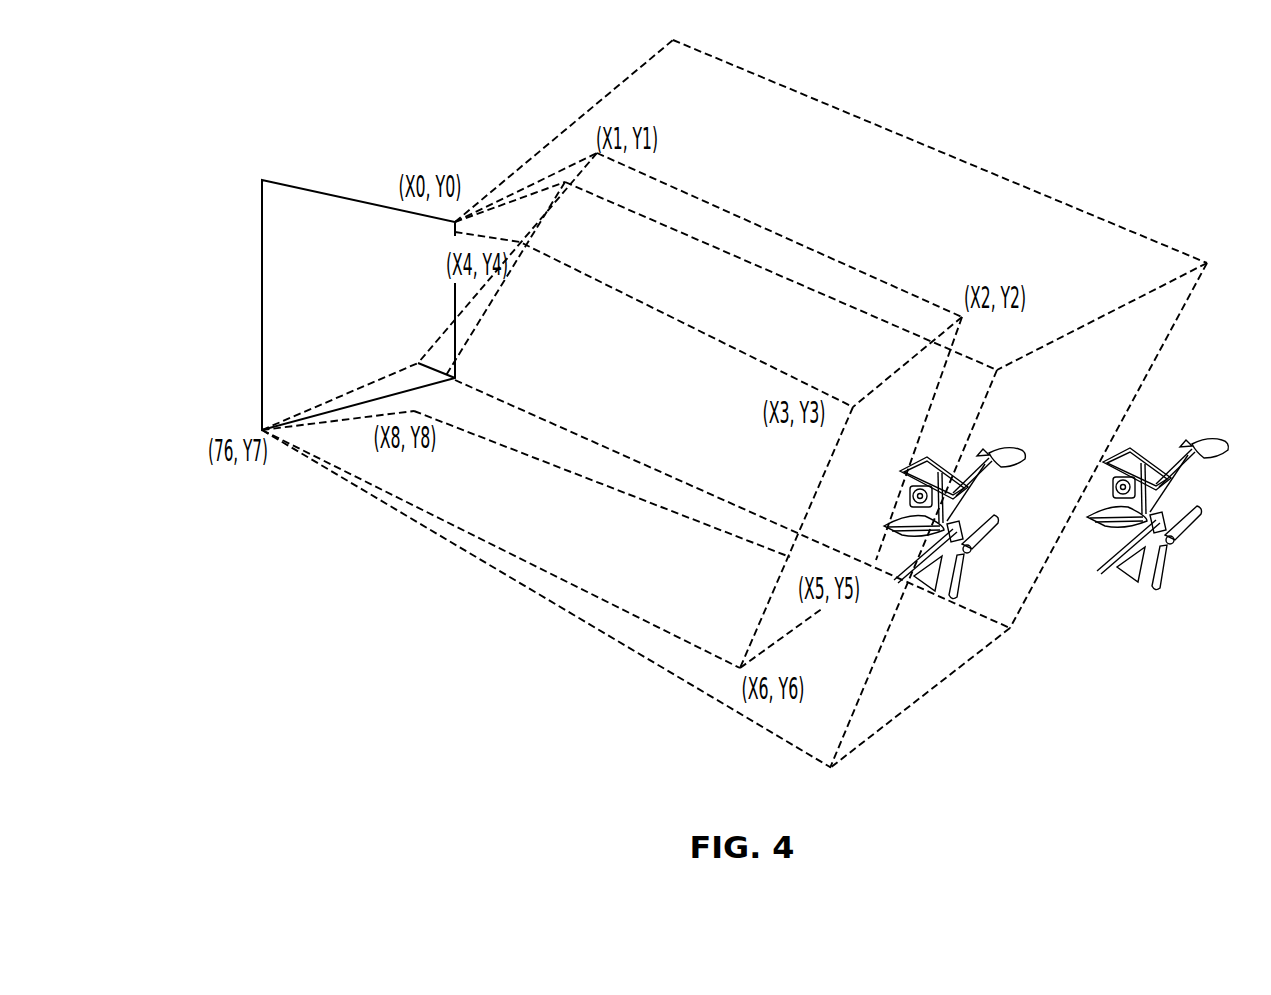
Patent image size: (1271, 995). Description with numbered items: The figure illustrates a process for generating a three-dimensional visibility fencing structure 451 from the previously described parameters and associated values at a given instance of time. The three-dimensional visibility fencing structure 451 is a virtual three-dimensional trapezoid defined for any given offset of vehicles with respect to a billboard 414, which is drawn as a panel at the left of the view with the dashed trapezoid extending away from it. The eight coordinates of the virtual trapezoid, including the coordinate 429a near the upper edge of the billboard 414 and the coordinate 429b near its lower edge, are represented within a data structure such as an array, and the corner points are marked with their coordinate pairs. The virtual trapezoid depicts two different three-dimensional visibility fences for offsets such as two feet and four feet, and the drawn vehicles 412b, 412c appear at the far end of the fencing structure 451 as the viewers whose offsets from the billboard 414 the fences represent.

The billboard 414 is at (307, 190).
The coordinate 429a is at (734, 404).
The coordinate 429b is at (393, 488).
The three-dimensional visibility fencing structure 451 is at (513, 578).
The unmanned aerial vehicle 412b is at (978, 570).
The unmanned aerial vehicle 412c is at (1105, 577).